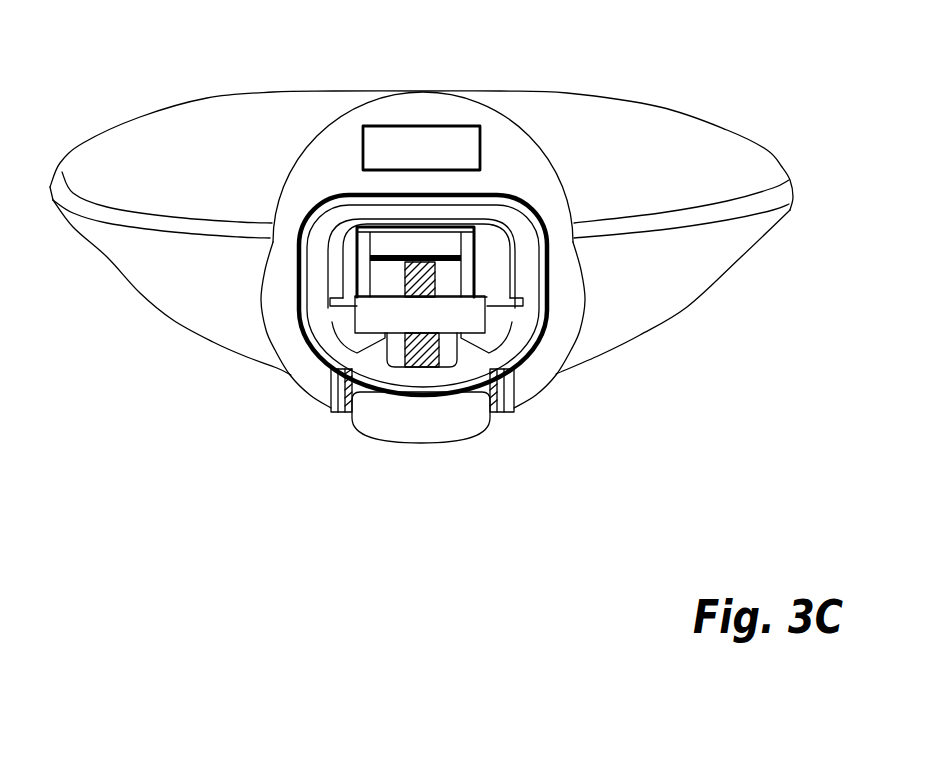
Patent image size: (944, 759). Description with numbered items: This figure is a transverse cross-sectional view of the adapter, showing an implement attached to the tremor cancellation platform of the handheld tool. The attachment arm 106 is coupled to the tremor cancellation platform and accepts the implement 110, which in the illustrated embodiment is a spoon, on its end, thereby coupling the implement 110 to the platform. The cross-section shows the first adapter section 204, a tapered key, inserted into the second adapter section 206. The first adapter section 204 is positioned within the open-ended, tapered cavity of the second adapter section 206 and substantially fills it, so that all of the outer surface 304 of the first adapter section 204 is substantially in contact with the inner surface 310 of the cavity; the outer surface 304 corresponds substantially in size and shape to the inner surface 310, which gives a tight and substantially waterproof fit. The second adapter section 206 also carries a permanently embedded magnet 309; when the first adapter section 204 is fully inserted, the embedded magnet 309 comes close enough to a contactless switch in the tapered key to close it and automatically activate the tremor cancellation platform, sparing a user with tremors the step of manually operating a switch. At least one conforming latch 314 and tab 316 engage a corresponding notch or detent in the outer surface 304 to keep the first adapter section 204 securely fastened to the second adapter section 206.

The attachment arm 106 is at (442, 325).
The implement 110 is at (603, 156).
The first adapter section 204 is at (289, 290).
The second adapter section 206 is at (527, 119).
The outer surface 304 is at (541, 313).
The embedded magnet 309 is at (422, 150).
The inner surface 310 is at (357, 206).
The conforming latch 314 is at (424, 408).
The tab 316 is at (335, 412).